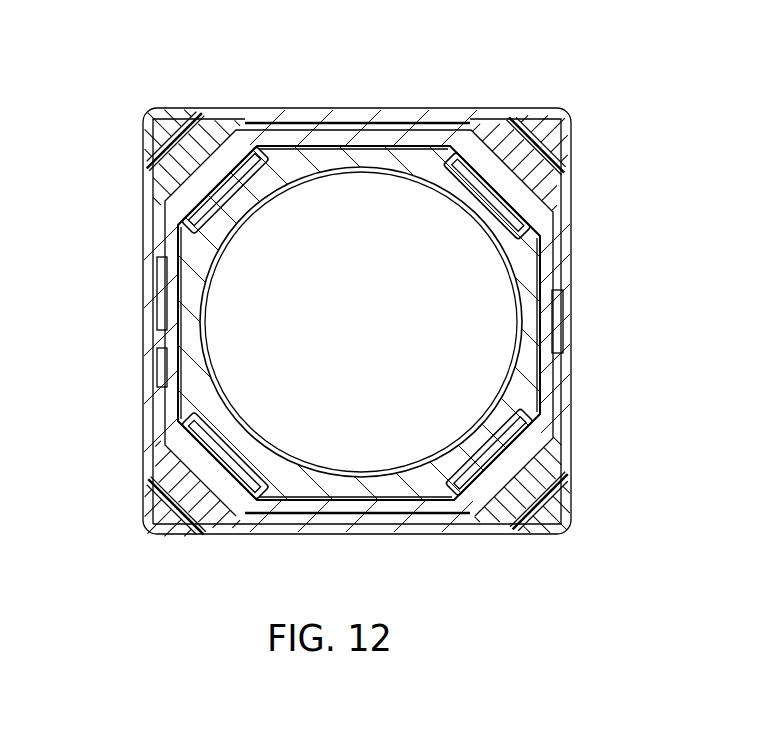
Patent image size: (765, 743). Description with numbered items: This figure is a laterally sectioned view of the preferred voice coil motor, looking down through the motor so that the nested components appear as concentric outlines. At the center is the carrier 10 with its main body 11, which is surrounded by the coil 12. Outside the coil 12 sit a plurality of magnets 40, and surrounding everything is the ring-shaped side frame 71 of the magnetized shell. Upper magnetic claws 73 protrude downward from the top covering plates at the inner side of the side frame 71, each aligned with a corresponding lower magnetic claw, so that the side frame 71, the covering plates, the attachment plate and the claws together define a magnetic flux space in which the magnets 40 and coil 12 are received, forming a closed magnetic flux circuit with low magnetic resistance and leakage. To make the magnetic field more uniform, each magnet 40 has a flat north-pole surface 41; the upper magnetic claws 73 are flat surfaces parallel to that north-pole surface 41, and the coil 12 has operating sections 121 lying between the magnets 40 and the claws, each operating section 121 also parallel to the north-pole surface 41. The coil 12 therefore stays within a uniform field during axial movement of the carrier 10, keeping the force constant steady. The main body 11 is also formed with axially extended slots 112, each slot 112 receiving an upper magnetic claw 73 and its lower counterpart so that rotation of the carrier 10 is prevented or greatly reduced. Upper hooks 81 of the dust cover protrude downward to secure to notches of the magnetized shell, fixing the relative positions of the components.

The carrier 10 is at (523, 253).
The main body 11 is at (378, 154).
The axially extended slot 112 is at (289, 165).
The coil 12 is at (173, 303).
The operating section 121 is at (193, 255).
The magnet 40 is at (178, 172).
The north-pole surface 41 is at (203, 225).
The side frame 71 is at (210, 110).
The upper magnetic claw 73 is at (214, 216).
The upper hook 81 is at (171, 120).